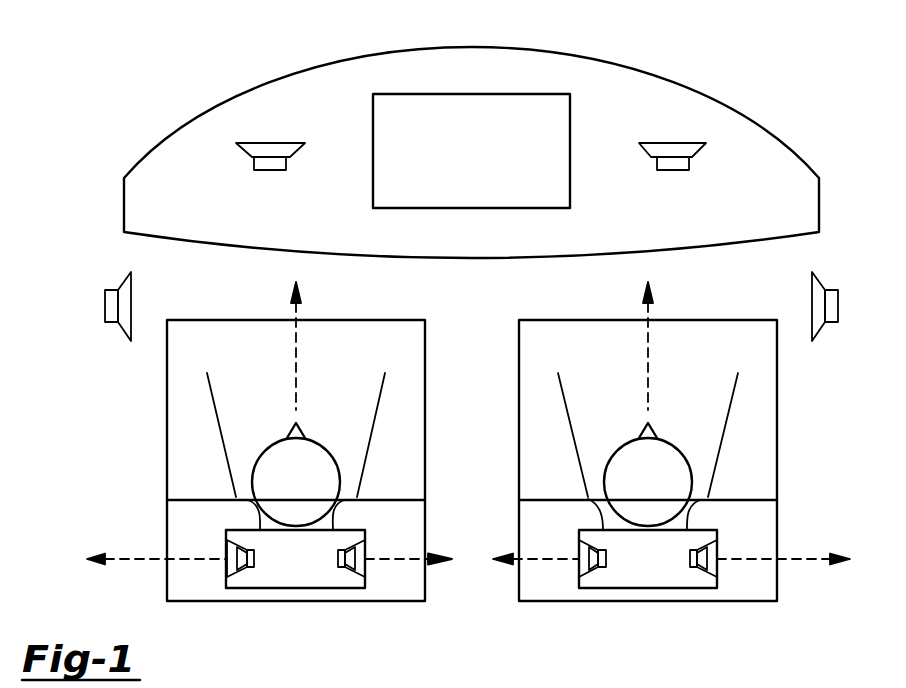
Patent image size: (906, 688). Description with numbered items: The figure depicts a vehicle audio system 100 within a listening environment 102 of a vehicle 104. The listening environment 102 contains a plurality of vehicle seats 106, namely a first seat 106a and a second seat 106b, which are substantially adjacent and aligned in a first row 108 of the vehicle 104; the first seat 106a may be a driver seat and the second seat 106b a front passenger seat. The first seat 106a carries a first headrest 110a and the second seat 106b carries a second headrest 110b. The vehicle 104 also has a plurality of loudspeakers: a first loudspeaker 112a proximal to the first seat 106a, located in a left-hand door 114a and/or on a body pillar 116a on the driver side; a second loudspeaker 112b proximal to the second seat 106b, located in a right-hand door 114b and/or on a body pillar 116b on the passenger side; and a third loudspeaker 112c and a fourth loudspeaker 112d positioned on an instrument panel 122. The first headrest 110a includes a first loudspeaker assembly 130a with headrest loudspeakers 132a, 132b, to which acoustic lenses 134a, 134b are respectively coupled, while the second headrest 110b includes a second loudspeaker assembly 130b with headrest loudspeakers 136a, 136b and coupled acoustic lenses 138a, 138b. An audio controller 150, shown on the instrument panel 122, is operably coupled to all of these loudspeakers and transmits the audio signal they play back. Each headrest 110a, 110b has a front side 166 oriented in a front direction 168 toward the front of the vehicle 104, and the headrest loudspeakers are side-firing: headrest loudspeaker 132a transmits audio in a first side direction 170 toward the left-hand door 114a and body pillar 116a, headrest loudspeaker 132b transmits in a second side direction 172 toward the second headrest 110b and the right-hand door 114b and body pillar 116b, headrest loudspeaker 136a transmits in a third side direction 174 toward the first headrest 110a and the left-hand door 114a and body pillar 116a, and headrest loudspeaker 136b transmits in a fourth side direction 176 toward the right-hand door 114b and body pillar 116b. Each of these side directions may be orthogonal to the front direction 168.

The vehicle audio system 100 is at (779, 74).
The listening environment 102 is at (491, 303).
The vehicle 104 is at (491, 36).
The vehicle seats 106 is at (504, 498).
The first seat 106a is at (167, 530).
The second seat 106b is at (777, 528).
The first row 108 is at (504, 413).
The first headrest 110a is at (271, 588).
The second headrest 110b is at (676, 588).
The first loudspeaker 112a is at (132, 300).
The second loudspeaker 112b is at (812, 300).
The third loudspeaker 112c is at (269, 170).
The fourth loudspeaker 112d is at (673, 170).
The left-hand door 114a is at (113, 394).
The right-hand door 114b is at (860, 394).
The body pillar 116a is at (113, 459).
The body pillar 116b is at (860, 459).
The instrument panel 122 is at (610, 87).
The first loudspeaker assembly 130a is at (324, 582).
The second loudspeaker assembly 130b is at (619, 582).
The headrest loudspeaker 132a is at (250, 547).
The headrest loudspeaker 132b is at (340, 547).
The acoustic lens 134a is at (227, 573).
The acoustic lens 134b is at (365, 573).
The headrest loudspeaker 136a is at (602, 547).
The headrest loudspeaker 136b is at (694, 547).
The acoustic lens 138a is at (580, 572).
The acoustic lens 138b is at (717, 572).
The audio controller 150 is at (570, 183).
The front side 166 is at (248, 500).
The front direction 168 is at (296, 368).
The first side direction 170 is at (120, 563).
The second side direction 172 is at (413, 560).
The third side direction 174 is at (531, 560).
The fourth side direction 176 is at (820, 564).